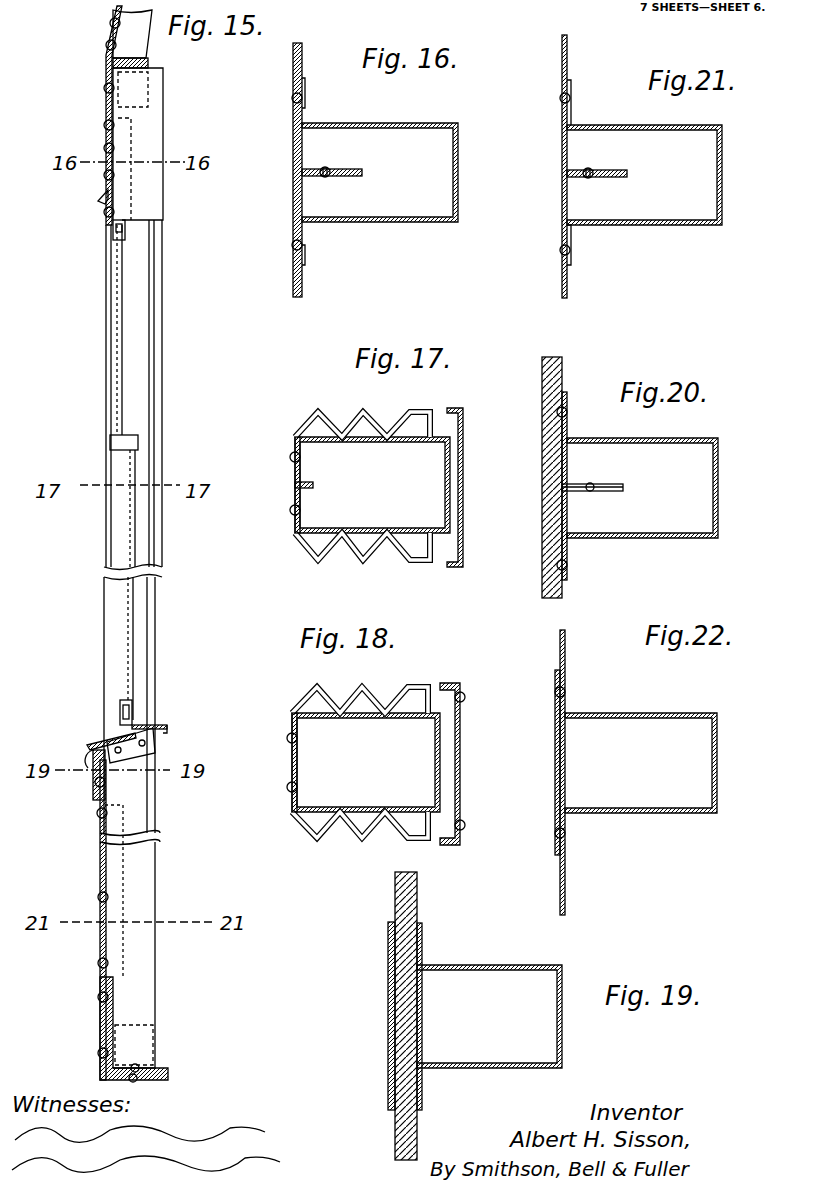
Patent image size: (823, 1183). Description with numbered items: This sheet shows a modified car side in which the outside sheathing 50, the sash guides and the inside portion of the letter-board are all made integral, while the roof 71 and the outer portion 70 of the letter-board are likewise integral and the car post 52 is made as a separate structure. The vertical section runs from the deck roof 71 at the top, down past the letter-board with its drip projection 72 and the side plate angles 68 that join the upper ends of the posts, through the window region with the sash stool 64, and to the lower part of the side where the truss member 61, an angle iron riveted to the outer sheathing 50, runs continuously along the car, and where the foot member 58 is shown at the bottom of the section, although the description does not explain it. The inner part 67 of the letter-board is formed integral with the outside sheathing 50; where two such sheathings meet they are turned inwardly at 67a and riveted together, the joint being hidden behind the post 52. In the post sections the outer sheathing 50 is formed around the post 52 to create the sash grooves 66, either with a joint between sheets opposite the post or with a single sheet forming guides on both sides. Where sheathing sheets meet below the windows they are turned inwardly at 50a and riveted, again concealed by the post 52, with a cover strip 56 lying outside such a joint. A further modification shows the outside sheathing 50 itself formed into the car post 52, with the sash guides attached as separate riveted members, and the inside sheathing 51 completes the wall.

In FIG. 15, the outside sheathing 50 is at (113, 138).
In FIG. 21, the outside sheathing 50 is at (562, 70).
In FIG. 17, the outside sheathing 50 is at (295, 522).
In FIG. 20, the outside sheathing 50 is at (565, 385).
In FIG. 18, the outside sheathing 50 is at (300, 700).
In FIG. 22, the outside sheathing 50 is at (560, 655).
In FIG. 19, the outside sheathing 50 is at (395, 895).
In FIG. 21, the inwardly turned portion of sheathing 50a is at (620, 182).
In FIG. 20, the inwardly turned portion of sheathing 50a is at (615, 484).
In FIG. 17, the inside sheathing 51 is at (458, 478).
In FIG. 18, the inside sheathing 51 is at (460, 772).
In FIG. 16, the car post 52 is at (400, 123).
In FIG. 21, the car post 52 is at (645, 225).
In FIG. 17, the car post 52 is at (415, 437).
In FIG. 20, the car post 52 is at (672, 436).
In FIG. 18, the car post 52 is at (425, 713).
In FIG. 22, the car post 52 is at (675, 813).
In FIG. 19, the car post 52 is at (488, 965).
In FIG. 19, the cover strip 56 is at (390, 982).
In FIG. 15, the base foot 58 is at (102, 1030).
In FIG. 20, the truss member 61 is at (548, 540).
In FIG. 19, the truss member 61 is at (405, 1022).
In FIG. 15, the sash stool 64 is at (100, 740).
In FIG. 17, the sash grooves 66 is at (388, 548).
In FIG. 18, the sash grooves 66 is at (383, 713).
In FIG. 16, the inner part of letter-board 67 is at (300, 295).
In FIG. 16, the inwardly turned portion of letter-board sheathing 67a is at (345, 182).
In FIG. 15, the side plate angles 68 is at (140, 68).
In FIG. 15, the outer portion of letter-board 70 is at (108, 145).
In FIG. 16, the outer portion of letter-board 70 is at (292, 266).
In FIG. 15, the deck roof 71 is at (115, 10).
In FIG. 15, the drip projection 72 is at (98, 200).